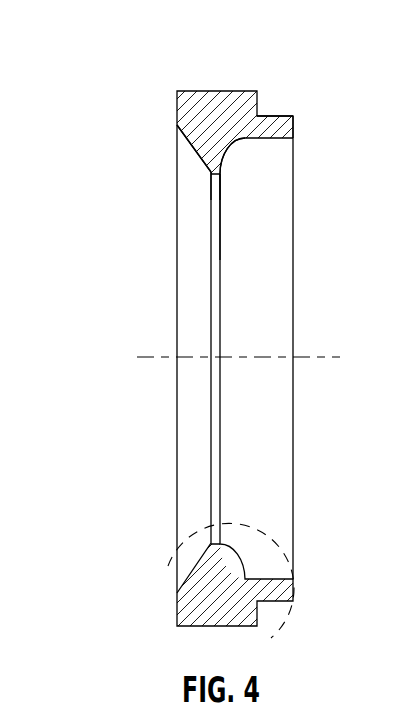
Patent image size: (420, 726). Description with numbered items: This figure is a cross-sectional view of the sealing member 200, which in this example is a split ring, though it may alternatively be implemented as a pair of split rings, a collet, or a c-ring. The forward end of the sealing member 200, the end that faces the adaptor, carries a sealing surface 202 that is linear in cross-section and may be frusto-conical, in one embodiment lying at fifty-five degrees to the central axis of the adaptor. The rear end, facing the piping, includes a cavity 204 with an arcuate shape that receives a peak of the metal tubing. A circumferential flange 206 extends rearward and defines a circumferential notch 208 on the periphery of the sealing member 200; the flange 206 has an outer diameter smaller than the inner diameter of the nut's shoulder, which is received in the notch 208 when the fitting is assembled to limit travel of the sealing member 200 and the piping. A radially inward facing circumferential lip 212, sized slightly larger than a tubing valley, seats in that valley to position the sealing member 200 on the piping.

The sealing member 200 is at (106, 40).
The sealing surface 202 is at (193, 146).
The cavity 204 is at (252, 158).
The circumferential flange 206 is at (294, 127).
The circumferential notch 208 is at (273, 115).
The circumferential lip 212 is at (210, 175).